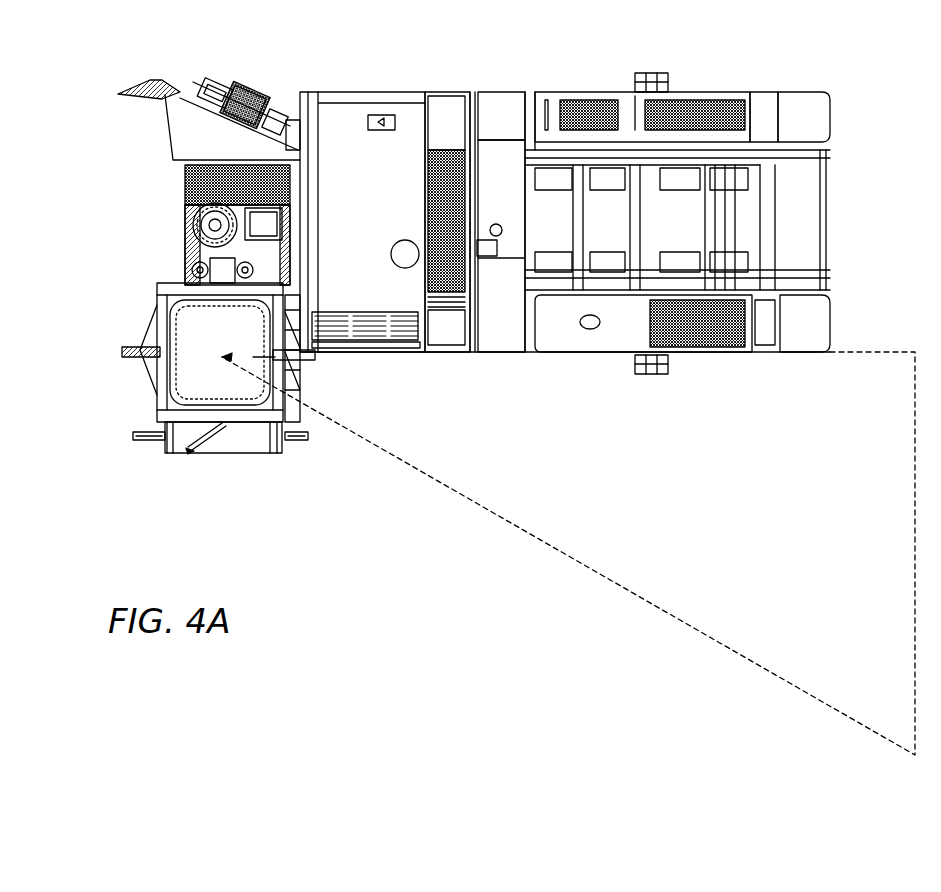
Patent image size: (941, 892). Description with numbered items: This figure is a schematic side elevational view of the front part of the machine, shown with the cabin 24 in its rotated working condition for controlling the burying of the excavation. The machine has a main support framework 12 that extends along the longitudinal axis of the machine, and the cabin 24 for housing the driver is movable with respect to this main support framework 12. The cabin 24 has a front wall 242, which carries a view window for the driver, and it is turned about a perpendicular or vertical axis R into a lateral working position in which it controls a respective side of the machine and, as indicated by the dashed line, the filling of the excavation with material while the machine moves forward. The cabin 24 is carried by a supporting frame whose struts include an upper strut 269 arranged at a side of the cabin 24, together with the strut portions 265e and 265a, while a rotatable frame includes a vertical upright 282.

The main support framework 12 is at (263, 225).
The axis R is at (210, 220).
The cabin 24 is at (134, 424).
The upper frame member 265e is at (170, 284).
The lower frame member 265a is at (232, 423).
The upper strut 269 is at (163, 402).
The vertical upright 282 is at (285, 376).
The front wall 242 is at (262, 459).